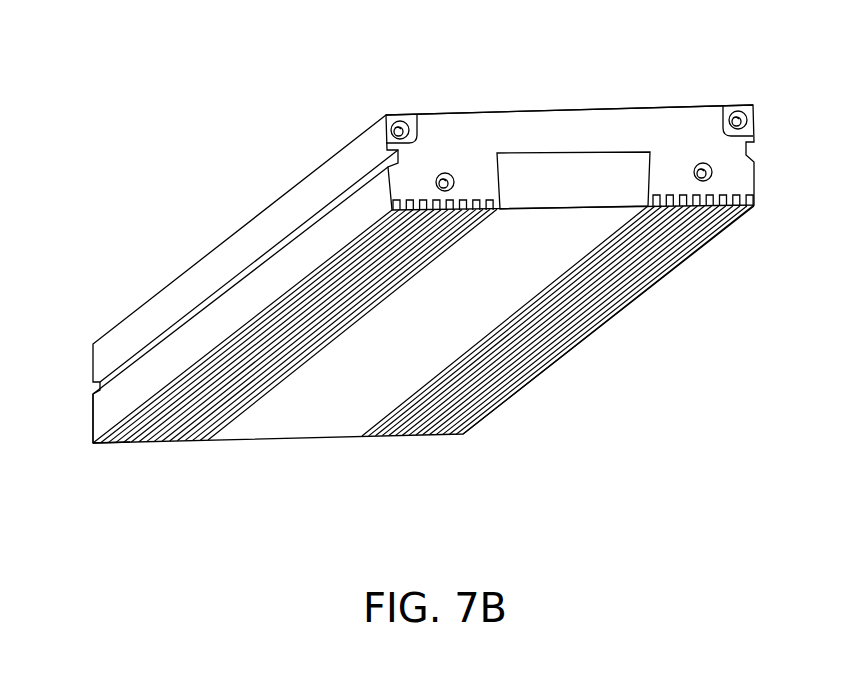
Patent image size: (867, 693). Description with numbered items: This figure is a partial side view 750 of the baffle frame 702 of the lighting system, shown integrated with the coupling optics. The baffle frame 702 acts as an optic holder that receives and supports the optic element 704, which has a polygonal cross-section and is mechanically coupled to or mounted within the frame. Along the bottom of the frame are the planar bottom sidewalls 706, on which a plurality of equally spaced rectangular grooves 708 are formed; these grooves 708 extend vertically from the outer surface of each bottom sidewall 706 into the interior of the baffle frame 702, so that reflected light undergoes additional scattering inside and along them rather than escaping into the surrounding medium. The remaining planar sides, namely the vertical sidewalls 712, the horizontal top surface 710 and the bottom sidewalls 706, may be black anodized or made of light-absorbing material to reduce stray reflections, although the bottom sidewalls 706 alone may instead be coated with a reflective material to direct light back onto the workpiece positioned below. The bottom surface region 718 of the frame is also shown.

The side view 750 is at (409, 270).
The baffle frame 702 is at (433, 140).
The optic element 704 is at (560, 191).
The bottom sidewalls 706 is at (95, 460).
The grooves 708 is at (183, 420).
The horizontal top surface 710 is at (562, 110).
The vertical sidewalls 712 is at (254, 237).
The bottom surface 718 is at (412, 346).